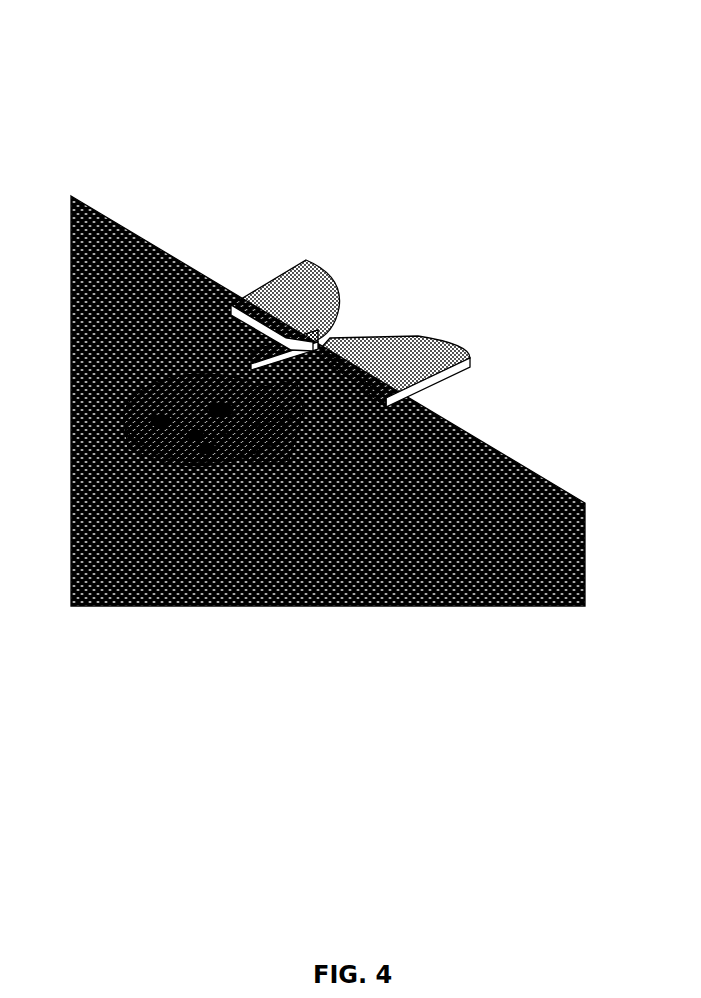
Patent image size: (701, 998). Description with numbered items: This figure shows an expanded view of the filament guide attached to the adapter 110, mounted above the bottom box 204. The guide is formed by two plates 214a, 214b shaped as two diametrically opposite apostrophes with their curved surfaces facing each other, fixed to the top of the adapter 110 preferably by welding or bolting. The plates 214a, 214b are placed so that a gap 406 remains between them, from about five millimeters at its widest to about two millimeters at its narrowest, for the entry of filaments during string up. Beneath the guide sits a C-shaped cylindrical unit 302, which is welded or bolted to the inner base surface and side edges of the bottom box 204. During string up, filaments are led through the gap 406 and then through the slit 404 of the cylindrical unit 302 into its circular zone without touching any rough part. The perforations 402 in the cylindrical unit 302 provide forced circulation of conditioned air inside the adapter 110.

The adapter 110 is at (513, 95).
The bottom box 204 is at (577, 598).
The first plate 214a is at (317, 302).
The second plate 214b is at (363, 340).
The cylindrical unit 302 is at (407, 380).
The perforations 402 is at (190, 435).
The slit 404 is at (297, 393).
The gap 406 is at (347, 327).